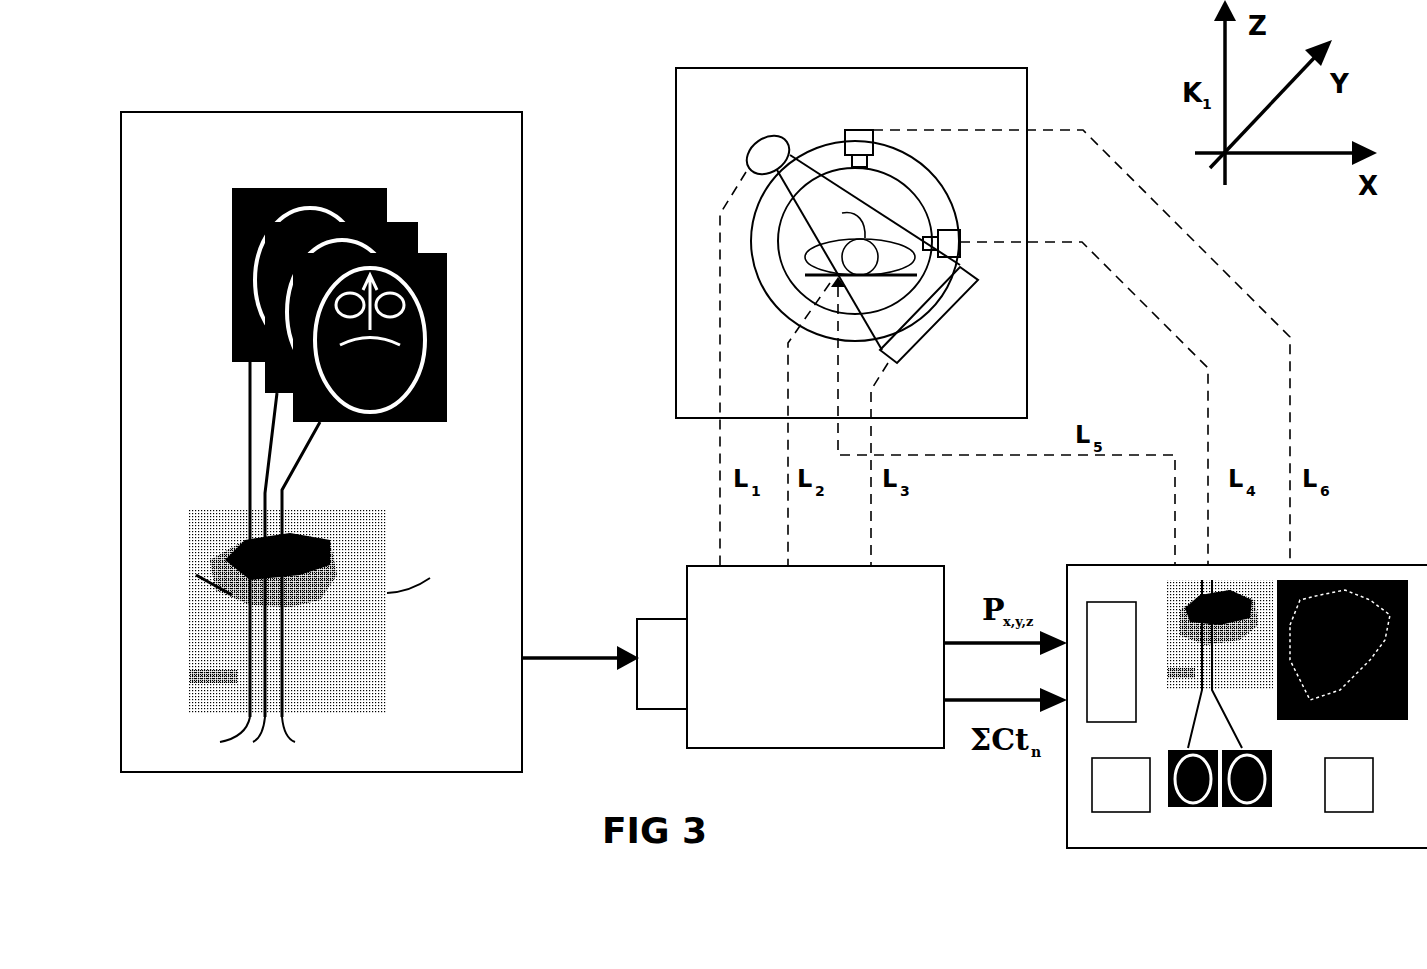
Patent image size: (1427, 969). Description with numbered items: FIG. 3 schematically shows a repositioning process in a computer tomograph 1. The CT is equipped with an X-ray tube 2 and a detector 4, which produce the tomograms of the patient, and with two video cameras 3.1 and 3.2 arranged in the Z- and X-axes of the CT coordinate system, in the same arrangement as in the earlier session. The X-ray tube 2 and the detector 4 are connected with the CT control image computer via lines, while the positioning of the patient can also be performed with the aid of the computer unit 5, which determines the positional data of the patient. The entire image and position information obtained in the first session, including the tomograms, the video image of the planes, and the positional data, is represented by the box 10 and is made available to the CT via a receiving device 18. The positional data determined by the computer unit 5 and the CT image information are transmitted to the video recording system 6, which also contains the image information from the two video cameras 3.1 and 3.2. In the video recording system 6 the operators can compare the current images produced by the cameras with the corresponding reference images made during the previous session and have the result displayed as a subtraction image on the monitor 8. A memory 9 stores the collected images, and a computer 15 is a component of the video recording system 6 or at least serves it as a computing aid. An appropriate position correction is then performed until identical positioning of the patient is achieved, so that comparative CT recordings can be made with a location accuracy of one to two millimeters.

The computed tomography scanner 1 is at (851, 214).
The X-ray tube 2 is at (766, 136).
The video camera 3.1 is at (857, 130).
The video camera 3.2 is at (949, 230).
The detector 4 is at (930, 317).
The computer unit 5 is at (821, 680).
The video recording system 6 is at (1247, 672).
The display 8 is at (1357, 797).
The memory 9 is at (1119, 686).
The box 10 is at (323, 117).
The computer 15 is at (1138, 797).
The receiving device 18 is at (678, 680).